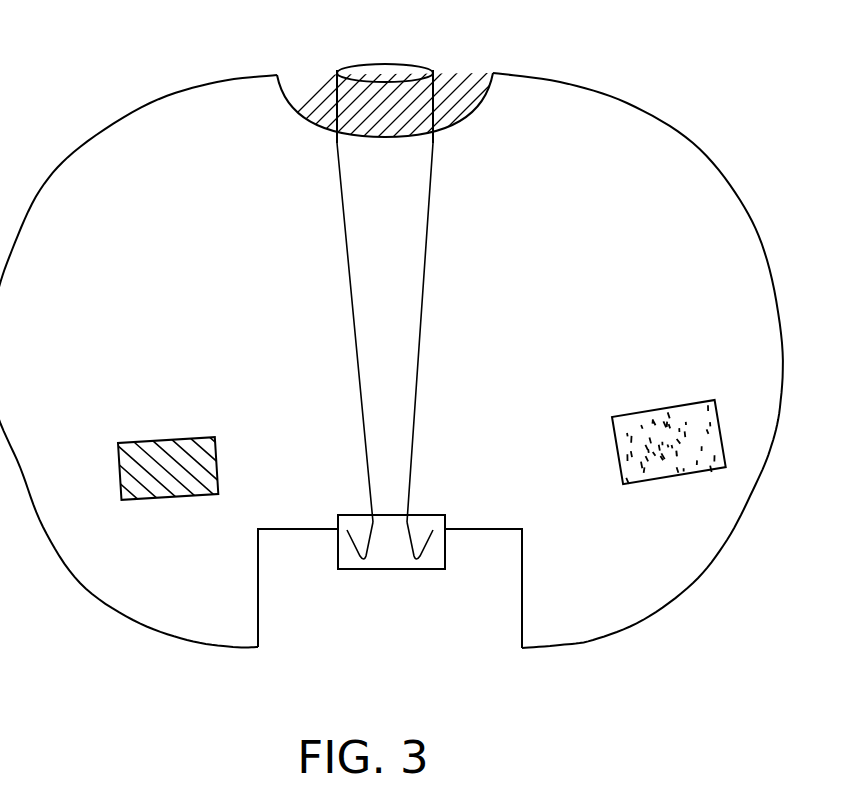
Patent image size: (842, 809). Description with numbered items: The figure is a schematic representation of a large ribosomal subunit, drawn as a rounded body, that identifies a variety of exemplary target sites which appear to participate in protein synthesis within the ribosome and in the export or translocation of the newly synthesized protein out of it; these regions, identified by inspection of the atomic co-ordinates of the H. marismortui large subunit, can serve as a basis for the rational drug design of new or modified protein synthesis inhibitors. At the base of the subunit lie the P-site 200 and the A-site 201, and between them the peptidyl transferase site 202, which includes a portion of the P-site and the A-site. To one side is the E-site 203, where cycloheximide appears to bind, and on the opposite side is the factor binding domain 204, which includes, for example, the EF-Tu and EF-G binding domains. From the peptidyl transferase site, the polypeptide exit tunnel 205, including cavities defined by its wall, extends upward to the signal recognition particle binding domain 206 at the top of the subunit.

The P-site 200 is at (298, 558).
The A-site 201 is at (480, 557).
The peptidyl transferase site 202 is at (365, 573).
The E-site 203 is at (165, 452).
The factor binding domain 204 is at (648, 430).
The polypeptide exit tunnel 205 is at (365, 302).
The signal recognition particle binding domain 206 is at (298, 72).